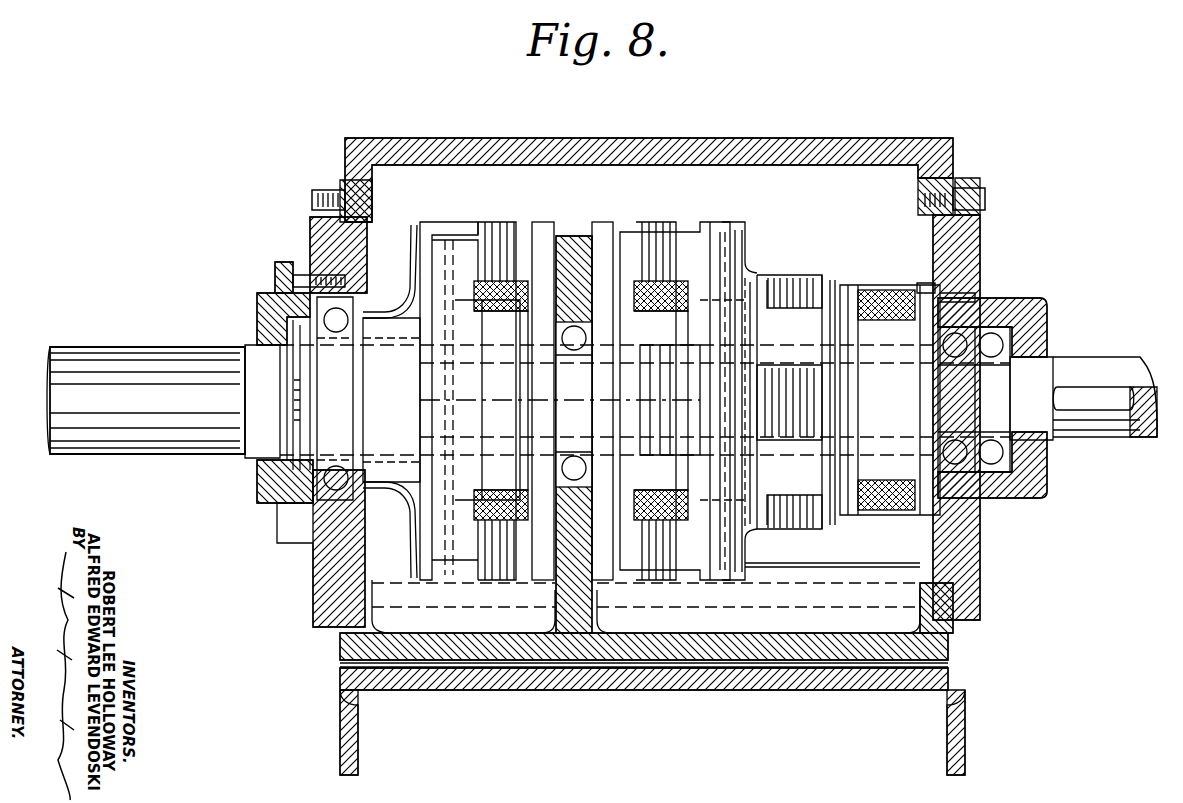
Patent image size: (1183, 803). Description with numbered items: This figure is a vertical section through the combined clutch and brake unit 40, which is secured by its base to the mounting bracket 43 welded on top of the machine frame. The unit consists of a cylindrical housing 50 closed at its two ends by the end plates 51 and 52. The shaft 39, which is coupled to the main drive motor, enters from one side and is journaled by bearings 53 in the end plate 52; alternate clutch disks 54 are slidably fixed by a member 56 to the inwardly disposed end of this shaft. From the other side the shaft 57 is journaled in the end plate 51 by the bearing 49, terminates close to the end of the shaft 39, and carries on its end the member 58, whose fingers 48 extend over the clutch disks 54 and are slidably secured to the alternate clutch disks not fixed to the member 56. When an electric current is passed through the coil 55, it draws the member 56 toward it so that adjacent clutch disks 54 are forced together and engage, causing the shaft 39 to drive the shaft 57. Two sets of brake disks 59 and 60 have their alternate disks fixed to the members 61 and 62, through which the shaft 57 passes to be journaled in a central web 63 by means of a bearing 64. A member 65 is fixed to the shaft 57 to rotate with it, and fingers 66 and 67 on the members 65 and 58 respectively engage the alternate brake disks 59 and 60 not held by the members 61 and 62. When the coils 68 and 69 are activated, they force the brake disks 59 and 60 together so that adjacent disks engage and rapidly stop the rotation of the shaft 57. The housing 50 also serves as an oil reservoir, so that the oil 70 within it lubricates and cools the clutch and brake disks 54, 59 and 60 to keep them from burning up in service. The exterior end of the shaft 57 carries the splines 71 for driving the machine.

The shaft 39 is at (1140, 358).
The clutch and brake unit 40 is at (984, 150).
The mounting bracket 43 is at (812, 688).
The fingers 48 is at (785, 275).
The bearing 49 is at (333, 380).
The cylindrical housing 50 is at (680, 652).
The end plate 51 is at (310, 232).
The end plate 52 is at (975, 232).
The bearings 53 is at (990, 405).
The clutch disks 54 is at (818, 283).
The coil 55 is at (895, 290).
The member 56 is at (822, 380).
The shaft 57 is at (262, 348).
The member 58 is at (722, 228).
The brake disks 59 is at (504, 222).
The brake disks 60 is at (662, 222).
The member 61 is at (548, 222).
The member 62 is at (605, 222).
The central web 63 is at (575, 237).
The bearing 64 is at (572, 408).
The member 65 is at (418, 270).
The fingers 66 is at (457, 225).
The fingers 67 is at (690, 225).
The coil 68 is at (488, 304).
The coil 69 is at (648, 304).
The oil 70 is at (905, 565).
The splines 71 is at (118, 385).